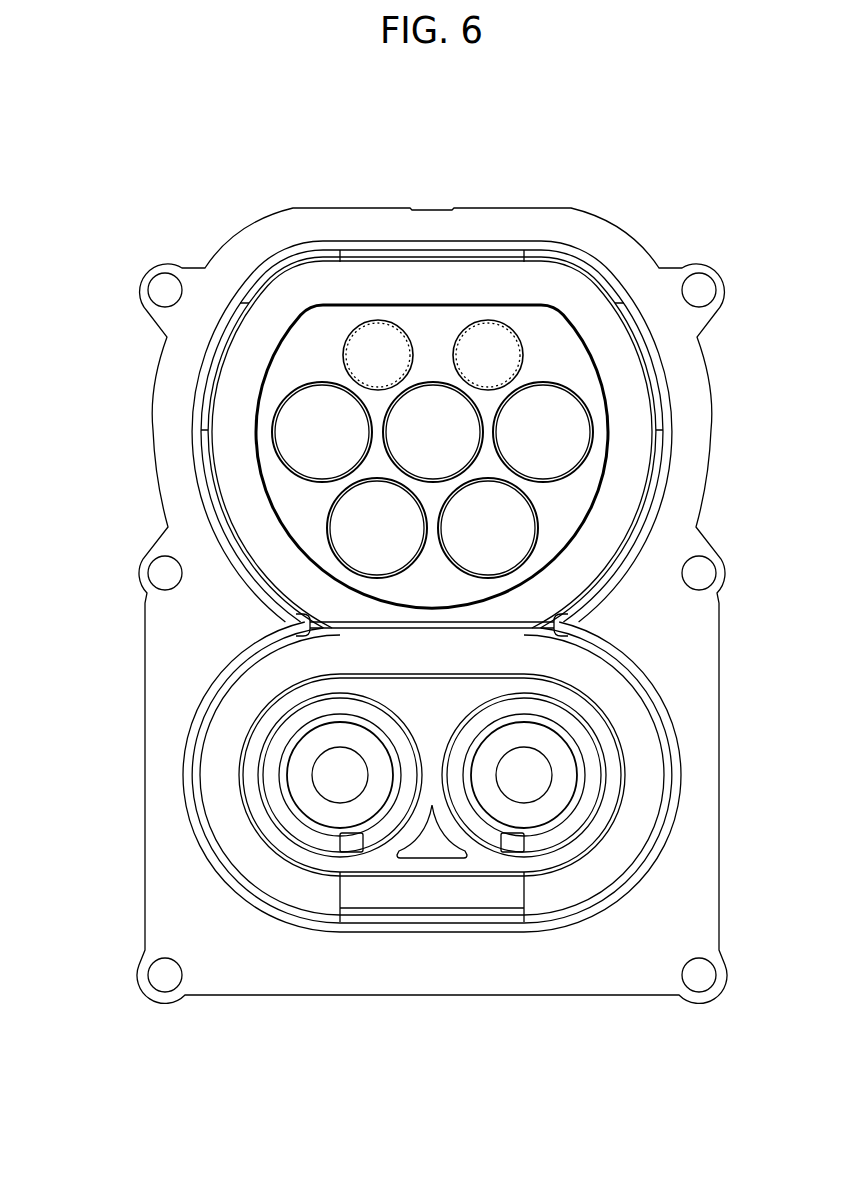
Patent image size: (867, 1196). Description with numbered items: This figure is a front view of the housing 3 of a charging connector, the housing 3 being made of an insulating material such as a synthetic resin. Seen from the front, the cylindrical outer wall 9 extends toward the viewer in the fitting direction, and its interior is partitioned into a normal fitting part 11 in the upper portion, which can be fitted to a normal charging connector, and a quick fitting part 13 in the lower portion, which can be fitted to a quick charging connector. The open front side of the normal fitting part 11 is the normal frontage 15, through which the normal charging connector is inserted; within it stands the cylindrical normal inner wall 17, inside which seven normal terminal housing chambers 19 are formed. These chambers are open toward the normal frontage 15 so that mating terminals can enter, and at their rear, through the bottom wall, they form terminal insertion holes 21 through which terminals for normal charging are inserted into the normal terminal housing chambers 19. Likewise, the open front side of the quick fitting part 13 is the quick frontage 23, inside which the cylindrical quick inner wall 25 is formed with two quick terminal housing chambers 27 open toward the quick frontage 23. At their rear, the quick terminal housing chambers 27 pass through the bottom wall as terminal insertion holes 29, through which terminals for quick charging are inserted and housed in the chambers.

The housing 3 is at (445, 176).
The outer wall 9 is at (277, 262).
The normal fitting part 11 is at (590, 296).
The quick fitting part 13 is at (628, 853).
The normal frontage 15 is at (220, 410).
The normal inner wall 17 is at (328, 328).
The normal terminal housing chambers 19 is at (580, 403).
The terminal insertion holes 21 is at (490, 533).
The quick frontage 23 is at (215, 742).
The quick inner wall 25 is at (478, 857).
The quick terminal housing chambers 27 is at (575, 718).
The terminal insertion holes 29 is at (318, 780).